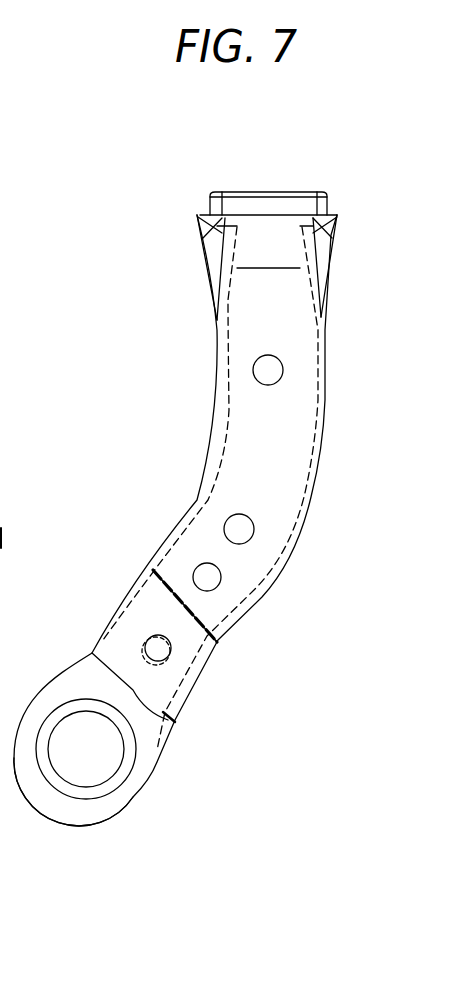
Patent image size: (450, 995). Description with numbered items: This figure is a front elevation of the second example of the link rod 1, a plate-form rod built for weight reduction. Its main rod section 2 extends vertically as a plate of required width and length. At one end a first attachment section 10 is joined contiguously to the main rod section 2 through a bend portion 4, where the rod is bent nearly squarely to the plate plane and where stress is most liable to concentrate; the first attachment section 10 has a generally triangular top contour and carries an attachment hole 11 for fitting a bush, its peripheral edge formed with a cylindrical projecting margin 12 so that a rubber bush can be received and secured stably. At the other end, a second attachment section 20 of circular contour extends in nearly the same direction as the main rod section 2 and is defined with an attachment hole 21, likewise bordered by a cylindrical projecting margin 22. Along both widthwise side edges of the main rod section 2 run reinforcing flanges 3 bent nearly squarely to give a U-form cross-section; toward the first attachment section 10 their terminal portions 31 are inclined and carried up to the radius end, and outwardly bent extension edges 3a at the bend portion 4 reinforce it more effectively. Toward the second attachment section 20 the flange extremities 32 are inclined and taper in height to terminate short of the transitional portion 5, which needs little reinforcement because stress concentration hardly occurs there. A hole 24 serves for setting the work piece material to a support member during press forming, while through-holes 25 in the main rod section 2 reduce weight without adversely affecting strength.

The link rod 1 is at (388, 143).
The main rod section 2 is at (283, 460).
The reinforcing flanges 3 is at (193, 502).
The extension edges 3a is at (210, 262).
The bend portion 4 is at (273, 225).
The transitional portion 5 is at (168, 720).
The first attachment section 10 is at (195, 215).
The attachment hole 11 is at (222, 200).
The cylindrical projecting margin 12 is at (284, 205).
The second attachment section 20 is at (128, 809).
The attachment hole 21 is at (62, 753).
The cylindrical projecting margin 22 is at (95, 792).
The hole 24 is at (268, 370).
The through-hole 25 is at (207, 577).
The terminal portions 31 is at (220, 225).
The terminal portions 32 is at (133, 592).